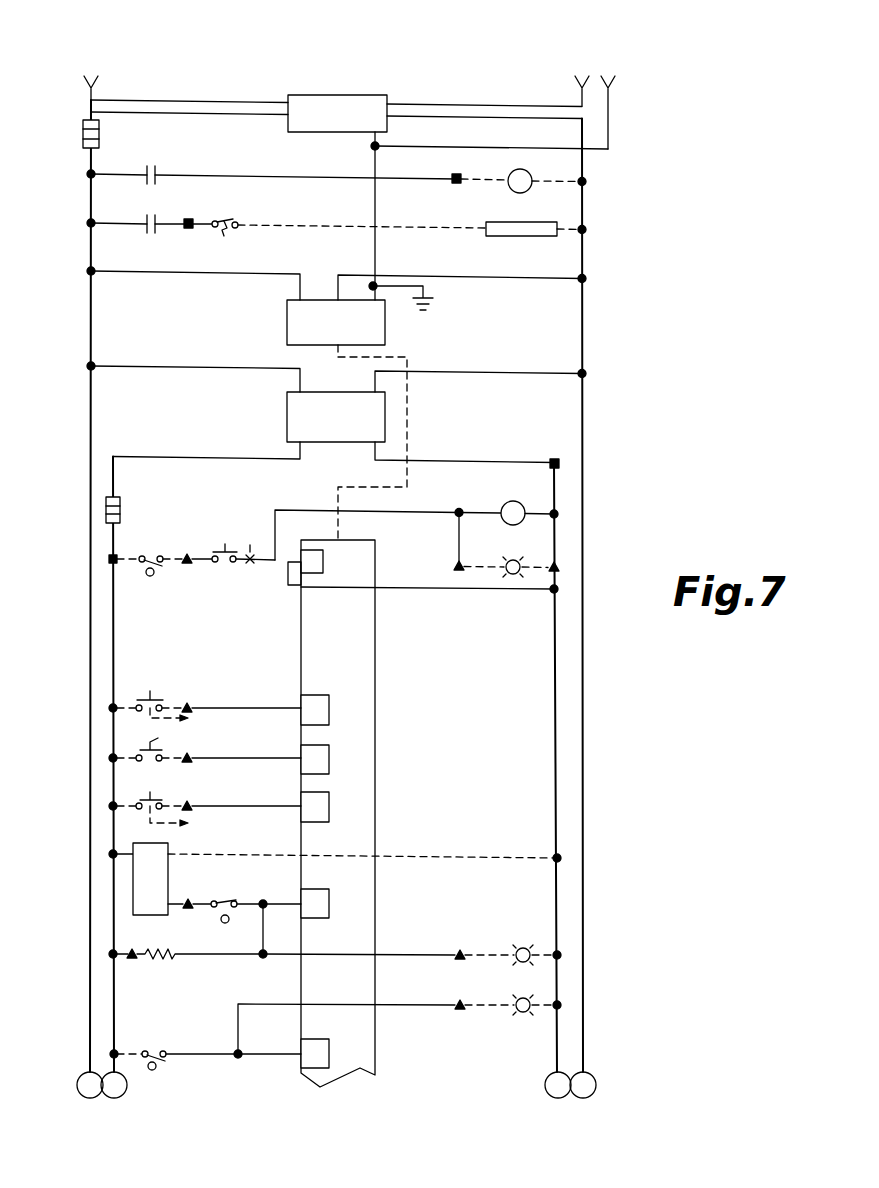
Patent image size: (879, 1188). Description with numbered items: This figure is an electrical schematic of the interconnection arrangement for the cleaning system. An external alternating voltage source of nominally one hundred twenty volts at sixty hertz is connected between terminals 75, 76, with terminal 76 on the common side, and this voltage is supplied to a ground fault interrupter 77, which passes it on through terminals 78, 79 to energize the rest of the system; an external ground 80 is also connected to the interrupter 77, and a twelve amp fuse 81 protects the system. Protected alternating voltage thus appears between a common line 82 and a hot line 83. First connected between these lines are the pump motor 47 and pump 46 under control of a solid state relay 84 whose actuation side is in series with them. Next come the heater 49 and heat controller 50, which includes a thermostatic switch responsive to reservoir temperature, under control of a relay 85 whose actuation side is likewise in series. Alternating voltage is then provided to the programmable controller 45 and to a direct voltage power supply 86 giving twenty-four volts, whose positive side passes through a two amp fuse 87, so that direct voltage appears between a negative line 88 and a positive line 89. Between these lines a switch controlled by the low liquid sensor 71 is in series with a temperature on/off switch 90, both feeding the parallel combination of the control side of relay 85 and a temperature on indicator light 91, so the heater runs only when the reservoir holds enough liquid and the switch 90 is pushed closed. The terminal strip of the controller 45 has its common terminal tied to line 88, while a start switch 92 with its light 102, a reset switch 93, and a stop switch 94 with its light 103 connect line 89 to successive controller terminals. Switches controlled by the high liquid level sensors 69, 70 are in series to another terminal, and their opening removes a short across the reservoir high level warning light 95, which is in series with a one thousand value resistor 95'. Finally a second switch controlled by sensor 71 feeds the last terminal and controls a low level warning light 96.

The terminal 75 is at (91, 72).
The terminal 76 is at (582, 72).
The external ground 80 is at (610, 78).
The ground fault interrupter 77 is at (387, 103).
The terminal 78 is at (282, 118).
The terminal 79 is at (393, 118).
The fuse 81 is at (83, 133).
The common line 82 is at (583, 1052).
The hot line 83 is at (90, 1054).
The solid state relay 84 is at (162, 174).
The relay 85 is at (147, 216).
The heat controller 50 is at (222, 220).
The pump motor 47 is at (498, 178).
The pump 46 is at (510, 178).
The heater 49 is at (496, 220).
The programmable controller 45 is at (287, 328).
The direct voltage power supply 86 is at (287, 420).
The fuse 87 is at (120, 505).
The line 89 is at (114, 538).
The temperature on/off switch 90 is at (225, 544).
The low liquid sensor 71 is at (146, 576).
The line 88 is at (554, 487).
The temperature on indicator light 91 is at (510, 558).
The start switch 92 is at (152, 692).
The light 102 is at (195, 720).
The reset switch 93 is at (158, 748).
The stop switch 94 is at (152, 798).
The light 103 is at (191, 822).
The high liquid level sensor 69 is at (160, 873).
The high liquid level sensor 70 is at (222, 923).
The resistor 95' is at (190, 969).
The reservoir high level warning light 95 is at (412, 939).
The low level warning light 96 is at (520, 997).